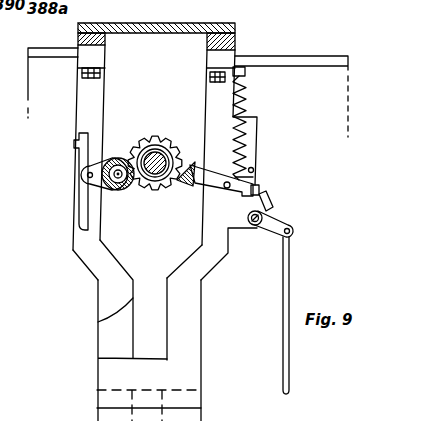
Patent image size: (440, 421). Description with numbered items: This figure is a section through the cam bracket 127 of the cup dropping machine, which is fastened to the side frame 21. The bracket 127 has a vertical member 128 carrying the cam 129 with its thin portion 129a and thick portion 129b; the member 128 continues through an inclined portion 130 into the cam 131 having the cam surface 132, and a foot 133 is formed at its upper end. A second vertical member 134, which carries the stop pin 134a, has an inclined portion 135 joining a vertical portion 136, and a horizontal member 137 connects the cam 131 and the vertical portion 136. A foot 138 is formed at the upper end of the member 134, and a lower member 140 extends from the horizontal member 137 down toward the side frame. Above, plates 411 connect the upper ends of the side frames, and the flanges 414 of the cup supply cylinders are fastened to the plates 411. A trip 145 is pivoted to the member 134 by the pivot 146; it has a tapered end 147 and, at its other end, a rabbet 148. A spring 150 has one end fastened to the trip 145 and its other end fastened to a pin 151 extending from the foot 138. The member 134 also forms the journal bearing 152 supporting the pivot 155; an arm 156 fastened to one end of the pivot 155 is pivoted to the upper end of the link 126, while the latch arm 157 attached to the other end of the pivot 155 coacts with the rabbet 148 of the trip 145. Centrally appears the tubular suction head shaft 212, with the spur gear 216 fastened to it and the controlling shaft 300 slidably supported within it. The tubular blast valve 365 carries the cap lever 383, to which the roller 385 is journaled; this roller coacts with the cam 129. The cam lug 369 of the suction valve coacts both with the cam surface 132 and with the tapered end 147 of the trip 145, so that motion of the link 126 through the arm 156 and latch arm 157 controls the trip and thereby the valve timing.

The side frame 21 is at (350, 79).
The link 126 is at (288, 378).
The cam bracket 127 is at (97, 108).
The vertical member 128 is at (87, 92).
The cam 129 is at (78, 212).
The thin portion 129a is at (77, 145).
The thick portion 129b is at (80, 226).
The inclined portion 130 is at (80, 243).
The cam 131 is at (110, 318).
The cam surface 132 is at (116, 314).
The foot 133 is at (104, 65).
The second vertical member 134 is at (207, 100).
The stop pin 134a is at (253, 167).
The inclined portion 135 is at (190, 271).
The vertical portion 136 is at (188, 328).
The horizontal member 137 is at (188, 373).
The foot 138 is at (207, 67).
The lower member 140 is at (117, 388).
The trip 145 is at (208, 172).
The pivot 146 is at (202, 186).
The tapered end 147 is at (188, 186).
The rabbet 148 is at (256, 186).
The spring 150 is at (246, 105).
The pin 151 is at (246, 72).
The journal bearing 152 is at (258, 227).
The pivot 155 is at (268, 214).
The arm 156 is at (276, 243).
The latch arm 157 is at (266, 198).
The tubular suction head shaft 212 is at (143, 184).
The spur gear 216 is at (157, 146).
The controlling shaft 300 is at (156, 160).
The tubular blast valve 365 is at (113, 158).
The cam lug 369 is at (186, 164).
The cap lever 383 is at (118, 194).
The roller 385 is at (103, 152).
The plates 411 is at (78, 36).
The flanges 414 is at (228, 24).